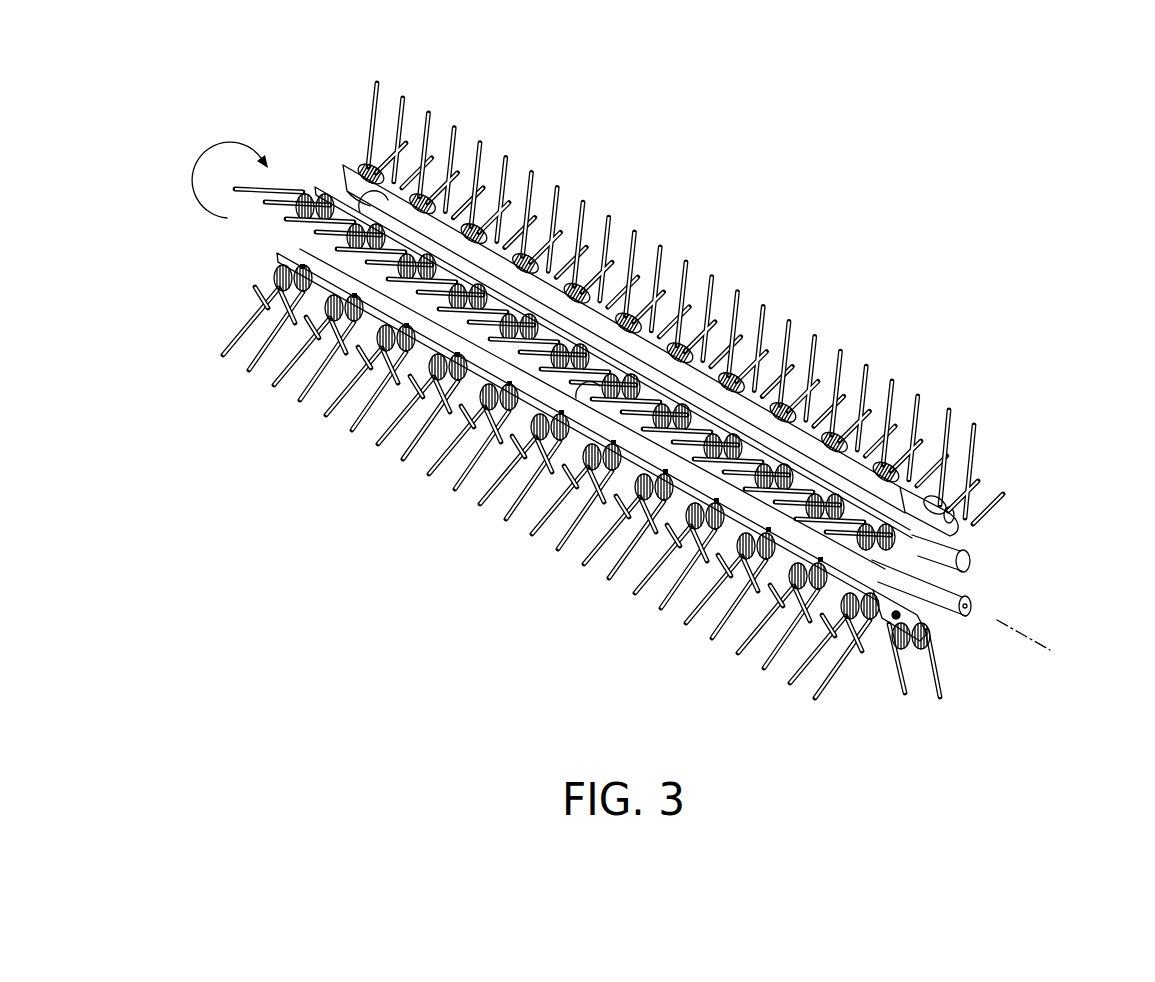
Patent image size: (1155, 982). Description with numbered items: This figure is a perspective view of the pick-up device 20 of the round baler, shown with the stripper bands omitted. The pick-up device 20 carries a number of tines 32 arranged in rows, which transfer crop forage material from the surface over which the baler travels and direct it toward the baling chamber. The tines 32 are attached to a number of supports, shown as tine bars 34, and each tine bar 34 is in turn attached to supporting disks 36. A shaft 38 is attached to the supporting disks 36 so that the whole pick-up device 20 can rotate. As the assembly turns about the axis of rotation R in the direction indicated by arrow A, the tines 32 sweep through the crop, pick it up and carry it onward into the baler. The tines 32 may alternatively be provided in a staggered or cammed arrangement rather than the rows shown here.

The pick-up device 20 is at (524, 122).
The tines 32 is at (485, 415).
The tine bars 34 is at (795, 430).
The supporting disks 36 is at (332, 262).
The shaft 38 is at (965, 592).
The arrow indicating direction of rotation A is at (193, 172).
The axis of rotation R is at (1040, 647).